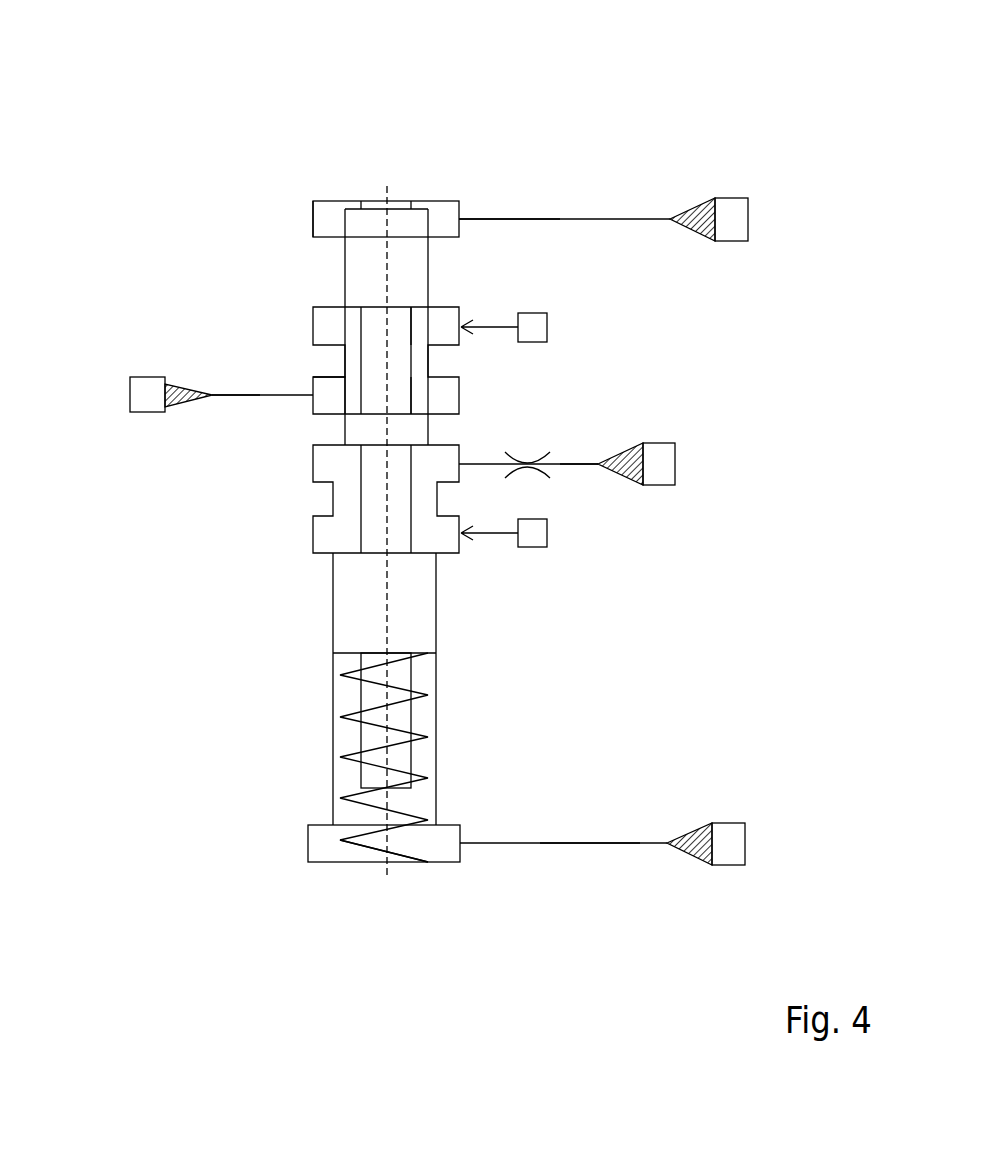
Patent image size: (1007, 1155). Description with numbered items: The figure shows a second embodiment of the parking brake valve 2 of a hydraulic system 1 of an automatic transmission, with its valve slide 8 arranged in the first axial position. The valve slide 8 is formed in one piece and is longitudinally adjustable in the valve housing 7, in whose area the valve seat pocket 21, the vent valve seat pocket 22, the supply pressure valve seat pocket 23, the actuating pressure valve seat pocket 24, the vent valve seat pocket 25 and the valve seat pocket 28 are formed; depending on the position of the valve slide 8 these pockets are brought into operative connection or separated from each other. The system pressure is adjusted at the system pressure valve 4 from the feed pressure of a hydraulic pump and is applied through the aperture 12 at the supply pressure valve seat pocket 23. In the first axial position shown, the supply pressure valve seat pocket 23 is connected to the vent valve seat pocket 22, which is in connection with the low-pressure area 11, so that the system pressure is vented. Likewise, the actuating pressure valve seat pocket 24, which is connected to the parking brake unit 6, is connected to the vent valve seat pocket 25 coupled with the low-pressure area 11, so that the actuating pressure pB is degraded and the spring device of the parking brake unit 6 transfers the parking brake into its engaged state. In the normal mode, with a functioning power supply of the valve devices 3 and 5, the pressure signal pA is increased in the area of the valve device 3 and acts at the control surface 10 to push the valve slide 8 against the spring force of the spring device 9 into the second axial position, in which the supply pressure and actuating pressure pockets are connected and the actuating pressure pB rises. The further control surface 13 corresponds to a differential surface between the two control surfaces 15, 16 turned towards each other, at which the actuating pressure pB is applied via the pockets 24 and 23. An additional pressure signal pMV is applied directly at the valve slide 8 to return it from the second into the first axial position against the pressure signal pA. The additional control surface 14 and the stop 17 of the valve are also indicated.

The hydraulic system 1 is at (157, 186).
The parking brake valve 2 is at (400, 178).
The valve device 3 is at (735, 198).
The system pressure valve 4 is at (795, 492).
The valve device 5 is at (727, 865).
The parking brake unit 6 is at (128, 397).
The valve housing 7 is at (317, 194).
The valve slide 8 is at (328, 263).
The spring device 9 is at (340, 717).
The control surface 10 is at (366, 194).
The low-pressure area 11 is at (795, 652).
The aperture 12 is at (795, 600).
The further control surface 13 is at (335, 410).
The additional control surface 14 is at (347, 657).
The control surface 15 is at (795, 385).
The control surface 16 is at (795, 437).
The stop 17 is at (411, 862).
The valve seat pocket 21 is at (308, 843).
The vent valve seat pocket 22 is at (313, 532).
The supply pressure valve seat pocket 23 is at (313, 460).
The actuating pressure valve seat pocket 24 is at (313, 408).
The vent valve seat pocket 25 is at (313, 327).
The valve seat pocket 28 is at (313, 211).
The pressure signal pA is at (505, 219).
The actuating pressure pB is at (230, 396).
The additional pressure signal pMV is at (587, 843).